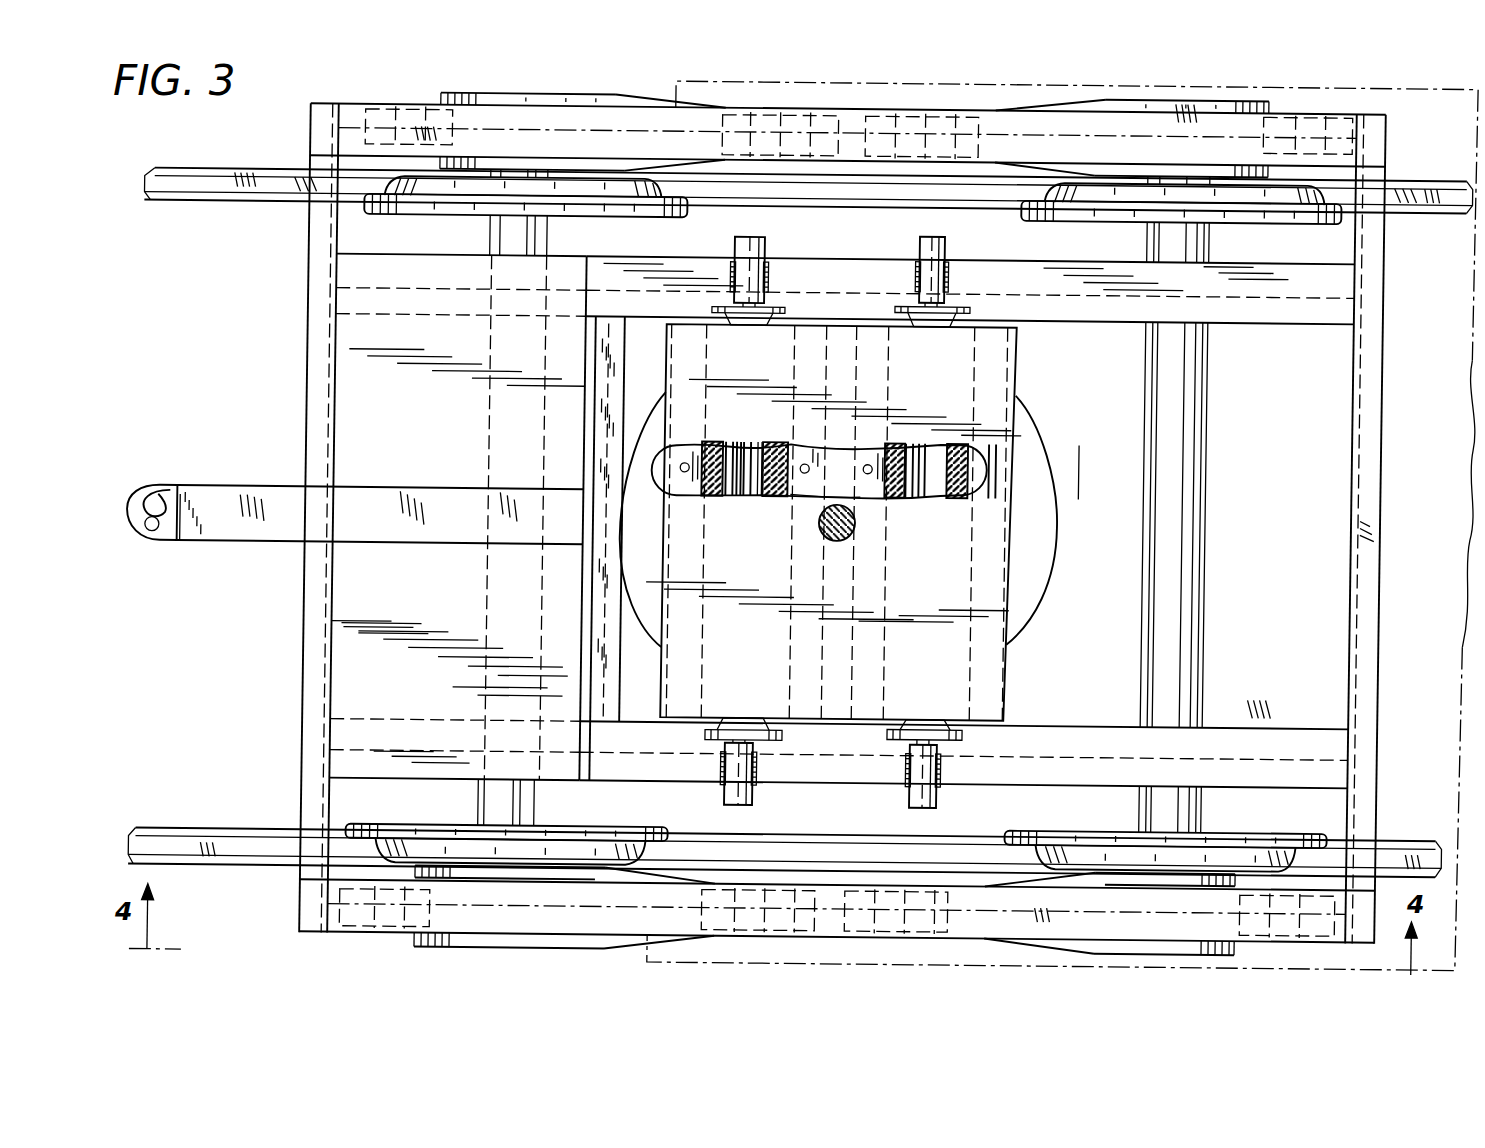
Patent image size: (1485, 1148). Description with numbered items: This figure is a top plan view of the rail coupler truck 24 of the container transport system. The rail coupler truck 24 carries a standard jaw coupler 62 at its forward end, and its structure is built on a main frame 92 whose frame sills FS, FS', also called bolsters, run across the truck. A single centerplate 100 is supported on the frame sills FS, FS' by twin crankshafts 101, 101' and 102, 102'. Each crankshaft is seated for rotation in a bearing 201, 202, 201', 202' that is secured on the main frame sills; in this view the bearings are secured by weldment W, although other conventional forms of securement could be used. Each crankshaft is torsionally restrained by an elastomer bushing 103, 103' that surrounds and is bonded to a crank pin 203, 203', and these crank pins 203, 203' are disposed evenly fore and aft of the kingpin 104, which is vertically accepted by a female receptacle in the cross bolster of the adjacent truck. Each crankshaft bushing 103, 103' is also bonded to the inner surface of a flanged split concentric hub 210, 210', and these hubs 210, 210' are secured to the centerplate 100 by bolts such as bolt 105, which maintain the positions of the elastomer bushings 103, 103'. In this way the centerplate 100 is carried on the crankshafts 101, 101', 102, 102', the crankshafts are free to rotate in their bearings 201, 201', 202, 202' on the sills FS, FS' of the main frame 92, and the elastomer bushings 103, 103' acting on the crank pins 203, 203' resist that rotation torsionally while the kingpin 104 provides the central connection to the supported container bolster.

The rail coupler truck 24 is at (235, 874).
The standard jaw coupler 62 is at (239, 497).
The main frame 92 is at (1390, 560).
The centerplate 100 is at (1044, 452).
The crankshaft 101 is at (938, 779).
The crankshaft 101' is at (954, 276).
The crankshaft 102 is at (733, 775).
The crankshaft 102' is at (772, 274).
The elastomer bushing 103 is at (744, 451).
The elastomer bushing 103' is at (971, 483).
The kingpin 104 is at (858, 520).
The bolt 105 is at (682, 464).
The bearing 201 is at (878, 789).
The bearing 201' is at (887, 257).
The bearing 202 is at (761, 793).
The bearing 202' is at (784, 277).
The crank pin 203 is at (732, 502).
The crank pin 203' is at (935, 514).
The flanged split concentric hub 210 is at (807, 485).
The flanged split concentric hub 210' is at (802, 510).
The weldment W is at (726, 273).
The frame sill FS is at (964, 725).
The frame sill FS' is at (970, 277).